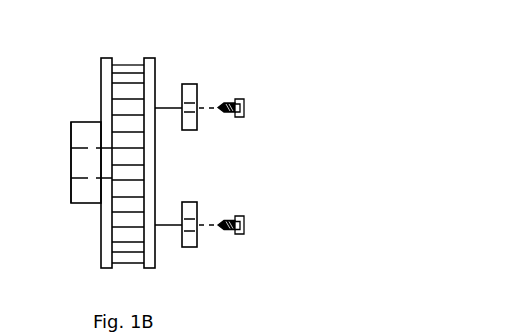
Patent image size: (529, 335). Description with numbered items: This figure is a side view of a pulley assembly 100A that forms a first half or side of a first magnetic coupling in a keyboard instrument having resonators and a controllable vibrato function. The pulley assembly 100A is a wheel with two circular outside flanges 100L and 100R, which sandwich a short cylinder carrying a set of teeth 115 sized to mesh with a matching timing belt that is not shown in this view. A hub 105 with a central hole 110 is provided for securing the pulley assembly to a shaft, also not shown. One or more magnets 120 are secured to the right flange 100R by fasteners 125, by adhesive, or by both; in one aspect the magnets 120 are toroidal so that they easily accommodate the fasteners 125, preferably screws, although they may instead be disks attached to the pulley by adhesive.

The pulley assembly 100A is at (203, 43).
The left outside flange 100L is at (104, 268).
The right outside flange 100R is at (155, 268).
The hub 105 is at (82, 121).
The central hole 110 is at (70, 163).
The teeth 115 is at (128, 65).
The magnets 120 is at (197, 130).
The fasteners 125 is at (229, 103).